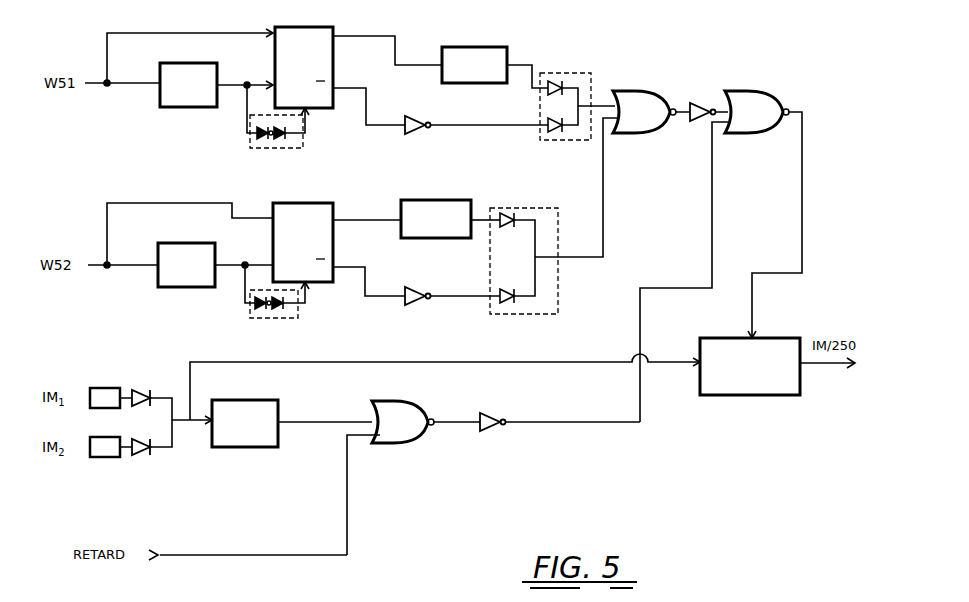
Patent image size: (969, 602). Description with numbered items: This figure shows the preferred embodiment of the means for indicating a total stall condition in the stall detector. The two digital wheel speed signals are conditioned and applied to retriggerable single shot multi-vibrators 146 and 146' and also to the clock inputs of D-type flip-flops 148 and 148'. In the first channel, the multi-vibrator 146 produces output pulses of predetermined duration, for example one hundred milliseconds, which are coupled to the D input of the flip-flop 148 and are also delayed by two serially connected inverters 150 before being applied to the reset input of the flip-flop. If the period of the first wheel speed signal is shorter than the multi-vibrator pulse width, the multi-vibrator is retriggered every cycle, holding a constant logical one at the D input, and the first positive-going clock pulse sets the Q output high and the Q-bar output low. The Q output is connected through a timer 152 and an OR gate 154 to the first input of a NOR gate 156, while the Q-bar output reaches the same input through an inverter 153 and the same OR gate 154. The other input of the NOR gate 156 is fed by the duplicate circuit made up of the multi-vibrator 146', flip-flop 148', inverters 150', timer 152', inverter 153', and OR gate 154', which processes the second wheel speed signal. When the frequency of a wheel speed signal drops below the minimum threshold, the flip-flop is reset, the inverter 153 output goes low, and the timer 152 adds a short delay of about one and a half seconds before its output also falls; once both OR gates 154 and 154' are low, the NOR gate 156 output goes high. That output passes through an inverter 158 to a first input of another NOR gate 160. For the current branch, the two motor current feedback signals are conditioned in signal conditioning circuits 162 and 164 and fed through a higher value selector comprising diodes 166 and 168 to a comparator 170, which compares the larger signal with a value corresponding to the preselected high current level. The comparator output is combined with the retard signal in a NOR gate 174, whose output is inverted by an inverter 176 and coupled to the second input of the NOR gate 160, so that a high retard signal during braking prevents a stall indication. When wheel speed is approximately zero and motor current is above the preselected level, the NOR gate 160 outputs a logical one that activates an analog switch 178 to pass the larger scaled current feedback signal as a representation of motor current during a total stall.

The retriggerable single shot multi-vibrator 146 is at (181, 98).
The D-type flip-flop 148 is at (304, 57).
The serially connected inverters 150 is at (293, 134).
The timer 152 is at (474, 54).
The inverter 153 is at (432, 114).
The OR gate 154 is at (572, 95).
The NOR gate 156 is at (635, 92).
The inverter 158 is at (700, 96).
The NOR gate 160 is at (758, 92).
The retriggerable single shot multi-vibrator 146' is at (186, 250).
The D-type flip-flop 148' is at (303, 231).
The serially connected inverters 150' is at (298, 310).
The timer 152' is at (436, 208).
The inverter 153' is at (434, 285).
The OR gate 154' is at (524, 246).
The signal conditioning circuit 162 is at (110, 388).
The signal conditioning circuit 164 is at (93, 458).
The diode 166 is at (140, 390).
The diode 168 is at (145, 458).
The comparator 170 is at (237, 400).
The NOR gate 174 is at (400, 404).
The inverter 176 is at (487, 412).
The analog switch 178 is at (748, 395).